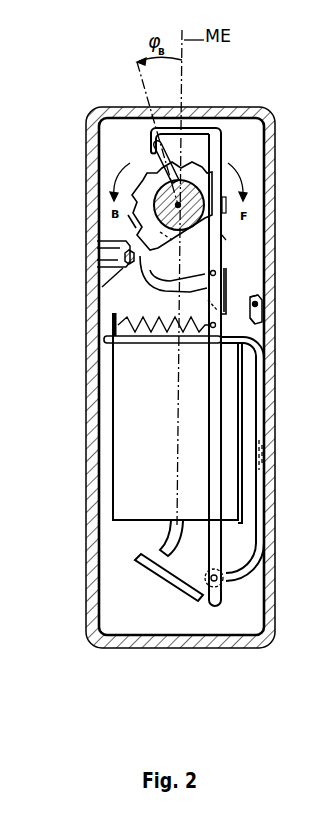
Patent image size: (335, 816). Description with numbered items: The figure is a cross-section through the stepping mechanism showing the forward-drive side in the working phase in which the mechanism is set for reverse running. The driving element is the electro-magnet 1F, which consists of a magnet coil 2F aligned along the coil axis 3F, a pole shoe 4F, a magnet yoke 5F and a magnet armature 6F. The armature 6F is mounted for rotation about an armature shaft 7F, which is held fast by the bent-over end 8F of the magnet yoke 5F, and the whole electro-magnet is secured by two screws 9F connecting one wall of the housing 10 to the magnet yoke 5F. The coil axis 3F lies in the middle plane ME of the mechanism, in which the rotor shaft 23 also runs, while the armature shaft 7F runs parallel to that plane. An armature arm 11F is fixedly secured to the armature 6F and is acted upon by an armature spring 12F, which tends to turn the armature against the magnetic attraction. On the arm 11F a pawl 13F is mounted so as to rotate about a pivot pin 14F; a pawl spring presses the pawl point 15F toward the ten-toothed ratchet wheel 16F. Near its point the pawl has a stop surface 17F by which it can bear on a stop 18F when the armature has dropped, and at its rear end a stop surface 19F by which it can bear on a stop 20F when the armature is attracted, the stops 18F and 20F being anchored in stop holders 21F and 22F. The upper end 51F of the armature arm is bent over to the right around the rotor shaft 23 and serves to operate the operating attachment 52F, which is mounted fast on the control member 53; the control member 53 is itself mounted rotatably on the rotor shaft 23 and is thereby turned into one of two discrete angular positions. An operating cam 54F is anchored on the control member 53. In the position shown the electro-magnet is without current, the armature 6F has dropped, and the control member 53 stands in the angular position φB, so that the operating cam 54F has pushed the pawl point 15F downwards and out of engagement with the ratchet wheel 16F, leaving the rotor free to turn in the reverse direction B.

The electro-magnet 1F is at (145, 423).
The magnet coil 2F is at (115, 483).
The coil axis 3F is at (177, 388).
The pole shoe 4F is at (155, 541).
The magnet yoke 5F is at (258, 525).
The magnet armature 6F is at (150, 577).
The armature shaft 7F is at (226, 584).
The bent-over end of the magnet yoke 8F is at (262, 566).
The screws 9F is at (272, 453).
The housing 10 is at (270, 486).
The armature arm 11F is at (222, 365).
The armature spring 12F is at (120, 348).
The pawl 13F is at (195, 282).
The pivot pin 14F is at (225, 275).
The pawl point 15F is at (223, 238).
The ratchet wheel 16F is at (145, 173).
The stop surface 17F is at (105, 283).
The stop 18F is at (120, 257).
The stop surface 19F is at (262, 290).
The stop 20F is at (265, 306).
The stop holder 21F is at (120, 238).
The stop holder 22F is at (266, 326).
The rotor shaft 23 is at (222, 190).
The upper end of the armature arm 51F is at (150, 147).
The operating attachment 52F is at (160, 167).
The control member 53 is at (183, 178).
The operating cam 54F is at (132, 222).